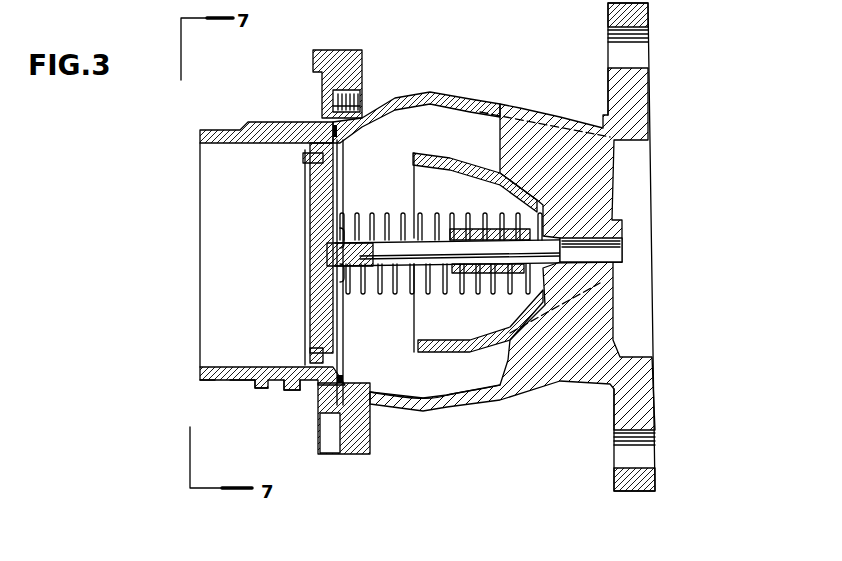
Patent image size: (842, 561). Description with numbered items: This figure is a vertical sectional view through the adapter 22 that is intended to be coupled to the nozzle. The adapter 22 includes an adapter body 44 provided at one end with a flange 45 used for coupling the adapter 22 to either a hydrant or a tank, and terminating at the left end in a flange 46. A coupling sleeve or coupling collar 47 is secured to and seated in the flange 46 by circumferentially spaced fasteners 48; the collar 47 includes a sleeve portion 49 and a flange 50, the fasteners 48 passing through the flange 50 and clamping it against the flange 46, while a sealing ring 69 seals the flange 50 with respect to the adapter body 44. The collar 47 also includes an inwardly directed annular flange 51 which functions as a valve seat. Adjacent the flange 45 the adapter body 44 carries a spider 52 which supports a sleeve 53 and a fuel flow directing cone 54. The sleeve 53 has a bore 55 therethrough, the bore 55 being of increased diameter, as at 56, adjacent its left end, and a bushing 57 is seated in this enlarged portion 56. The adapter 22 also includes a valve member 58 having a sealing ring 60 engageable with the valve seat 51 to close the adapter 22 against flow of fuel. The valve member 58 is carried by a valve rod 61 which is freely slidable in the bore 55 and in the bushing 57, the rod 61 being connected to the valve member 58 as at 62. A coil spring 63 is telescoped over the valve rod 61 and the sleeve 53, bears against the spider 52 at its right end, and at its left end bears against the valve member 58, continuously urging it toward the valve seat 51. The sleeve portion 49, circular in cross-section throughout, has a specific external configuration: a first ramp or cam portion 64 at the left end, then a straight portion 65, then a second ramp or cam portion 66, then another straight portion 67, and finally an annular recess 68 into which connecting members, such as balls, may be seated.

The adapter 22 is at (468, 88).
The adapter body 44 is at (483, 404).
The flange 45 is at (647, 408).
The flange 46 is at (358, 59).
The coupling sleeve 47 is at (198, 313).
The fasteners 48 is at (363, 100).
The sleeve portion 49 is at (220, 368).
The flange 50 is at (318, 410).
The inwardly directed annular flange 51 is at (306, 358).
The spider 52 is at (603, 314).
The sleeve 53 is at (481, 218).
The fuel flow directing cone 54 is at (472, 350).
The bore 55 is at (620, 249).
The enlarged portion 56 is at (510, 283).
The bushing 57 is at (449, 290).
The valve member 58 is at (310, 232).
The sealing ring 60 is at (305, 157).
The valve rod 61 is at (418, 250).
The connection 62 is at (347, 278).
The coil spring 63 is at (372, 210).
The first ramp or cam portion 64 is at (203, 383).
The straight portion 65 is at (240, 382).
The second ramp or cam portion 66 is at (258, 388).
The straight portion 67 is at (284, 388).
The annular recess 68 is at (316, 362).
The sealing ring 69 is at (345, 375).